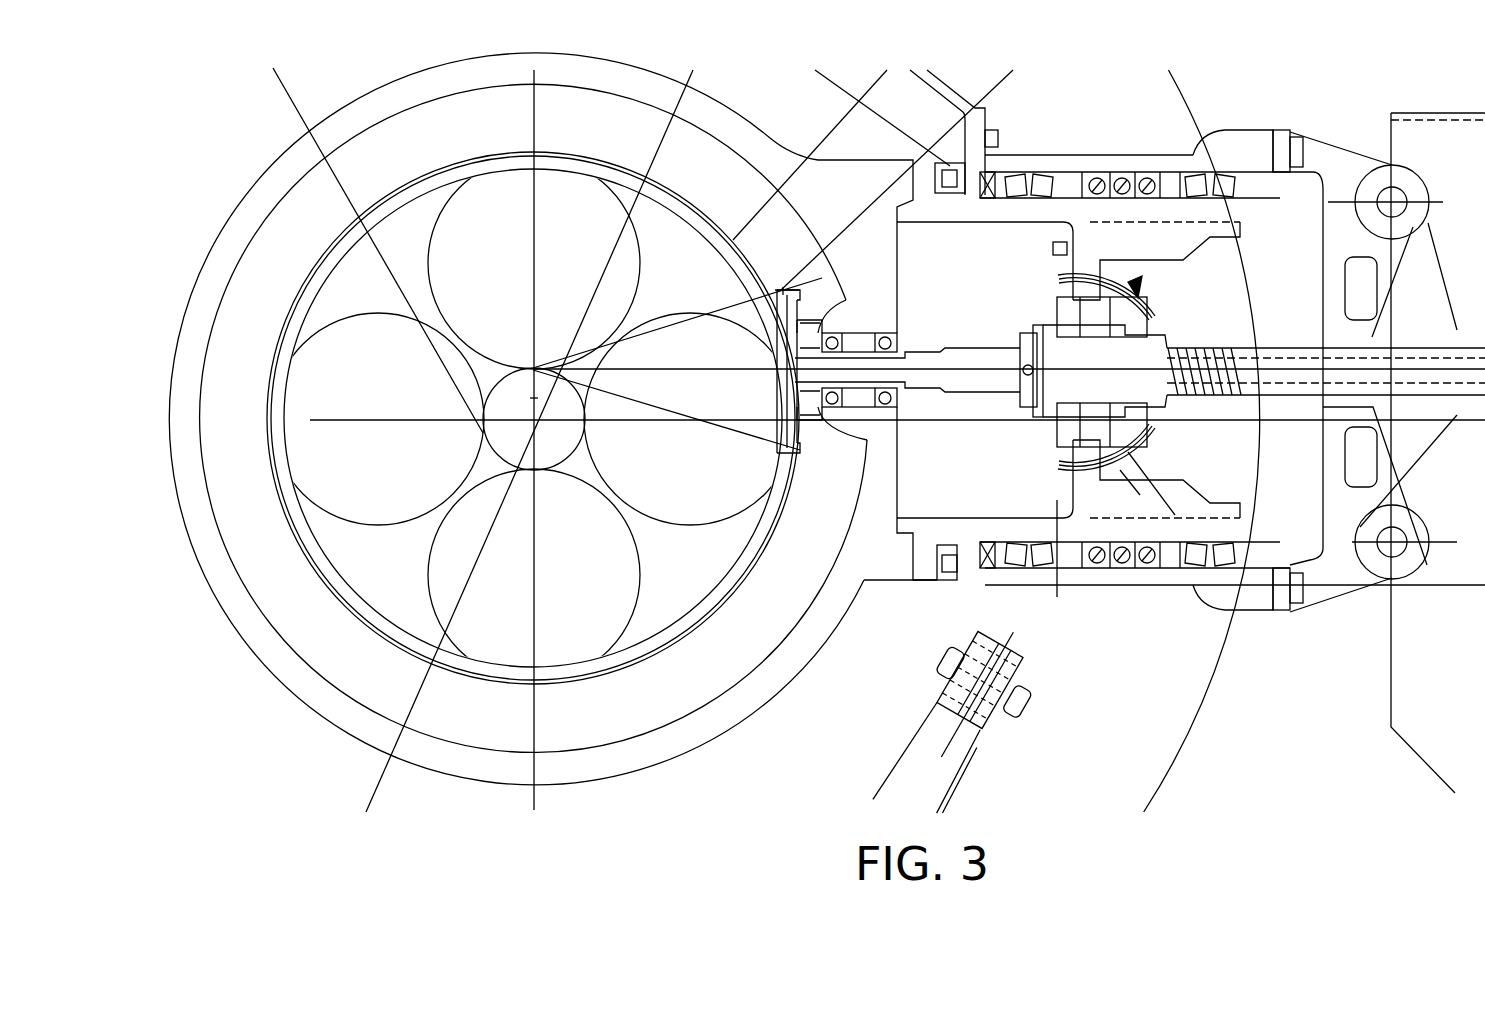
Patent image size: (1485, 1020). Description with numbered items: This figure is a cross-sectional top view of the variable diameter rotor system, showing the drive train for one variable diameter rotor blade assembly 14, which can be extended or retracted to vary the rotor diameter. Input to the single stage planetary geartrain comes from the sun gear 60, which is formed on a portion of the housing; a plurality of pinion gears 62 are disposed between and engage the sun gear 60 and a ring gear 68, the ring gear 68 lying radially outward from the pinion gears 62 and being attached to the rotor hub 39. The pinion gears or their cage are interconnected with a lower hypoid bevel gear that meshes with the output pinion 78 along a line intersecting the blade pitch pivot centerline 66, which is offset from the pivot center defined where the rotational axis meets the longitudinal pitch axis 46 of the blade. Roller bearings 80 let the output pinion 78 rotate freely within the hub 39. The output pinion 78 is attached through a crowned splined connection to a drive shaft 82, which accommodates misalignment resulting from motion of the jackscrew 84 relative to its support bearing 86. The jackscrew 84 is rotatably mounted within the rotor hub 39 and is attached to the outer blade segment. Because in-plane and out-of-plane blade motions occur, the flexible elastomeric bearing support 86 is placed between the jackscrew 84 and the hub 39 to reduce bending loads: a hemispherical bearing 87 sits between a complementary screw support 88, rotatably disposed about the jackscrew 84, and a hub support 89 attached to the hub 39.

The variable diameter rotor blade assembly 14 is at (1405, 100).
The rotor hub 39 is at (967, 210).
The longitudinal pitch axis 46 is at (775, 420).
The sun gear 60 is at (515, 440).
The pinion gears 62 is at (682, 345).
The blade pitch pivot centerline 66 is at (853, 374).
The ring gear 68 is at (727, 140).
The output pinion 78 is at (780, 287).
The roller bearings 80 is at (859, 333).
The drive shaft 82 is at (942, 352).
The jackscrew 84 is at (1150, 355).
The flexible elastomeric bearing support 86 is at (1145, 240).
The hemispherical bearing 87 is at (1133, 417).
The screw support 88 is at (1060, 293).
The hub support 89 is at (1130, 455).